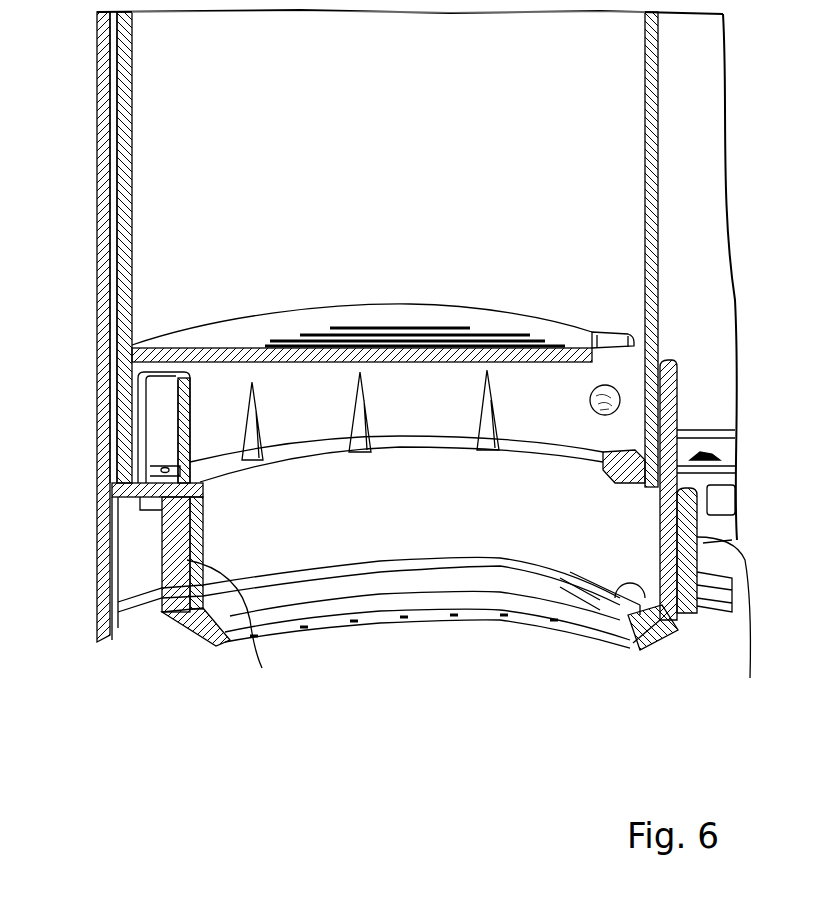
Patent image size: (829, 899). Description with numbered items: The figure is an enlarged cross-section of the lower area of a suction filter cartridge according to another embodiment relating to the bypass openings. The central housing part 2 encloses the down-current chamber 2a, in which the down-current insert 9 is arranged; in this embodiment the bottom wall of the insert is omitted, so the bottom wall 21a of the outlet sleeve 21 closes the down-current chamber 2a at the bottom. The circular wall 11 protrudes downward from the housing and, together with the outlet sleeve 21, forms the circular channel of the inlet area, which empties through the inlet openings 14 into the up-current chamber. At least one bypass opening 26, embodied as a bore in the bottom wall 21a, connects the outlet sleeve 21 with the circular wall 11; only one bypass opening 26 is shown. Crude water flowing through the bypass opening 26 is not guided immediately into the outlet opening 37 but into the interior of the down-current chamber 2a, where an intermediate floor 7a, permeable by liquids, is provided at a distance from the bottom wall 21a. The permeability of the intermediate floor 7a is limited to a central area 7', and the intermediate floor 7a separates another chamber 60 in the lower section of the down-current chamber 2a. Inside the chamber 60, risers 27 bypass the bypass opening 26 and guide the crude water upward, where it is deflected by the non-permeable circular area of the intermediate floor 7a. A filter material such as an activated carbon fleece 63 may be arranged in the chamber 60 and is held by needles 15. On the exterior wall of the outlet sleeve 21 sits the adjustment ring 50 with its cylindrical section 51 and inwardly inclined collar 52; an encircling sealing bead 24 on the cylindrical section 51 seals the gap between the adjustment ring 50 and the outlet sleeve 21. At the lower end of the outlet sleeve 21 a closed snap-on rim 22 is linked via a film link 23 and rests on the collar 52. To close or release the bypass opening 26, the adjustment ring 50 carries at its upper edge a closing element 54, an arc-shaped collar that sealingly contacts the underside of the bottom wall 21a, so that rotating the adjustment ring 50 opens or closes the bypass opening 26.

The central housing part 2 is at (103, 72).
The down-current insert 9 is at (117, 150).
The down-current chamber 2a is at (403, 154).
The central area 7' is at (415, 291).
The intermediate floor 7a is at (168, 350).
The needles 15 is at (488, 417).
The chamber 60 is at (433, 408).
The activated carbon fleece 63 is at (620, 392).
The risers 27 is at (137, 433).
The bypass opening 26 is at (163, 470).
The bottom wall 21a is at (140, 490).
The closing element 54 is at (157, 505).
The circular wall 11 is at (104, 548).
The outlet sleeve 21 is at (262, 668).
The outlet opening 37 is at (430, 681).
The snap-on rim 22 is at (577, 597).
The film link 23 is at (610, 603).
The collar 52 is at (655, 650).
The adjustment ring 50 is at (680, 632).
The inlet openings 14 is at (722, 452).
The sealing bead 24 is at (713, 597).
The cylindrical section 51 is at (750, 678).